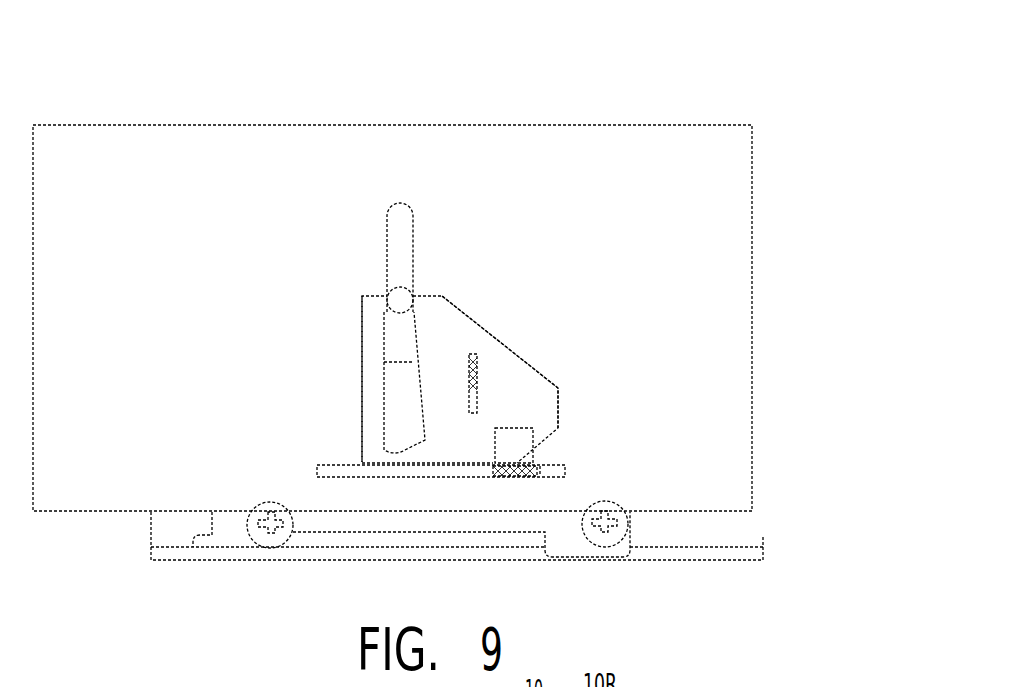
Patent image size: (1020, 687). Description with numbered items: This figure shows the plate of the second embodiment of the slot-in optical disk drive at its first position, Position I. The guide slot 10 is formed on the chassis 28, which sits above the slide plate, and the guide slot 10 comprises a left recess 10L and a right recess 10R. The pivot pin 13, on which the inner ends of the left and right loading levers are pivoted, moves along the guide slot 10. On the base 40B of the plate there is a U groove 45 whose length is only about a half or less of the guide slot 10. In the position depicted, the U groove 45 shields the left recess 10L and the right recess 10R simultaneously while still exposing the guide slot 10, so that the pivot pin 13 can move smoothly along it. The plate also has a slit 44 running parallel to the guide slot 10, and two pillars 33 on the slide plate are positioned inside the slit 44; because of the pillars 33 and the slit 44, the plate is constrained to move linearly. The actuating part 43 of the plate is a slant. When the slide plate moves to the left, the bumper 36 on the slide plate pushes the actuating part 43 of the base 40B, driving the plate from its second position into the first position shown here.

The guide slot 10 is at (395, 217).
The left recess 10L is at (385, 302).
The right recess 10R is at (414, 299).
The pivot pin 13 is at (402, 297).
The chassis 28 is at (705, 195).
The pillars 33 is at (477, 376).
The bumper 36 is at (533, 457).
The base 40B is at (453, 333).
The actuating part 43 is at (512, 448).
The slit 44 is at (477, 362).
The U groove 45 is at (397, 357).